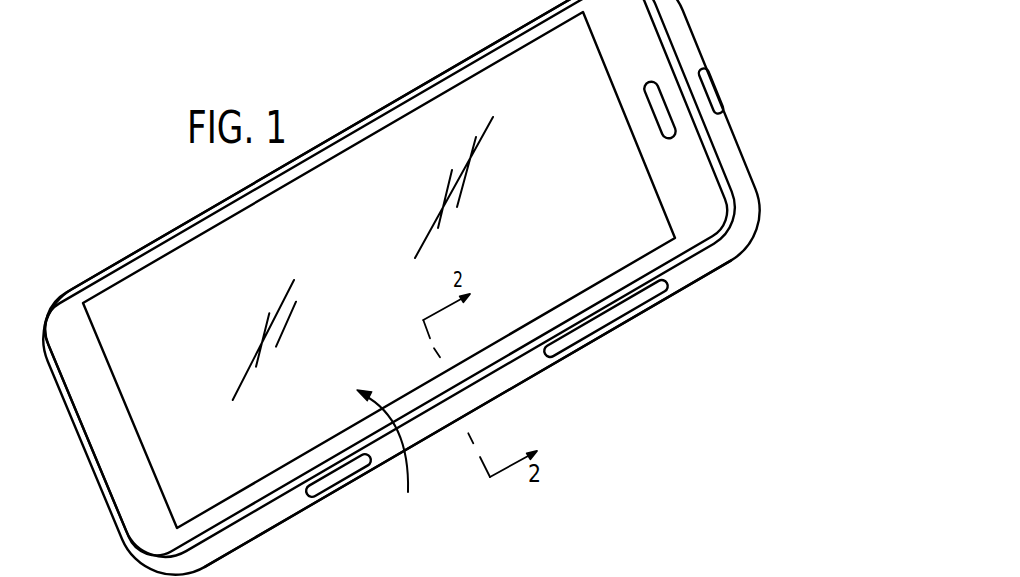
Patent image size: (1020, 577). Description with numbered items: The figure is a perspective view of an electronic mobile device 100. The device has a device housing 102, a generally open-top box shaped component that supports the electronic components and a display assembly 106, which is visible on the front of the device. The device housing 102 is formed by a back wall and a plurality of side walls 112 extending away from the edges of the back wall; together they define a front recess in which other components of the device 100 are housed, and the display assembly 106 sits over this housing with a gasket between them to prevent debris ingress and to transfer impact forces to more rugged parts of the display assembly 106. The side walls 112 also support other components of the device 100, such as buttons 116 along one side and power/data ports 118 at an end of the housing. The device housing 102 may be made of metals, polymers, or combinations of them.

The electronic mobile device 100 is at (345, 100).
The device housing 102 is at (600, 336).
The display assembly 106 is at (395, 456).
The side walls 112 is at (420, 88).
The buttons 116 is at (348, 478).
The power/data ports 118 is at (716, 85).